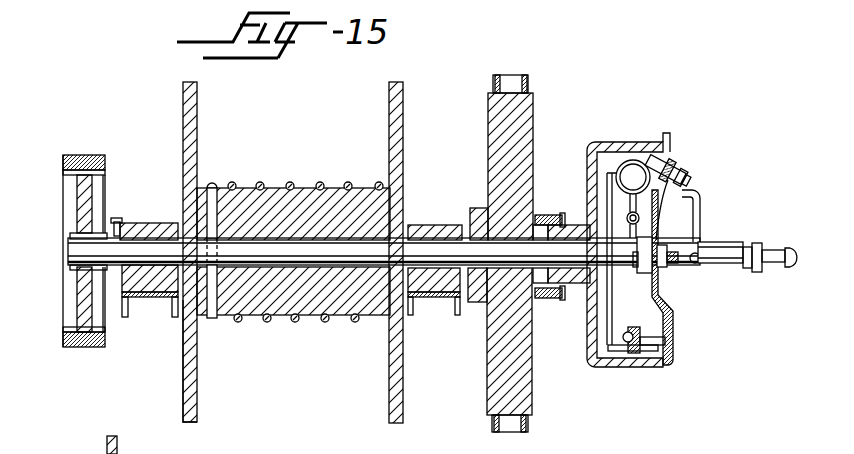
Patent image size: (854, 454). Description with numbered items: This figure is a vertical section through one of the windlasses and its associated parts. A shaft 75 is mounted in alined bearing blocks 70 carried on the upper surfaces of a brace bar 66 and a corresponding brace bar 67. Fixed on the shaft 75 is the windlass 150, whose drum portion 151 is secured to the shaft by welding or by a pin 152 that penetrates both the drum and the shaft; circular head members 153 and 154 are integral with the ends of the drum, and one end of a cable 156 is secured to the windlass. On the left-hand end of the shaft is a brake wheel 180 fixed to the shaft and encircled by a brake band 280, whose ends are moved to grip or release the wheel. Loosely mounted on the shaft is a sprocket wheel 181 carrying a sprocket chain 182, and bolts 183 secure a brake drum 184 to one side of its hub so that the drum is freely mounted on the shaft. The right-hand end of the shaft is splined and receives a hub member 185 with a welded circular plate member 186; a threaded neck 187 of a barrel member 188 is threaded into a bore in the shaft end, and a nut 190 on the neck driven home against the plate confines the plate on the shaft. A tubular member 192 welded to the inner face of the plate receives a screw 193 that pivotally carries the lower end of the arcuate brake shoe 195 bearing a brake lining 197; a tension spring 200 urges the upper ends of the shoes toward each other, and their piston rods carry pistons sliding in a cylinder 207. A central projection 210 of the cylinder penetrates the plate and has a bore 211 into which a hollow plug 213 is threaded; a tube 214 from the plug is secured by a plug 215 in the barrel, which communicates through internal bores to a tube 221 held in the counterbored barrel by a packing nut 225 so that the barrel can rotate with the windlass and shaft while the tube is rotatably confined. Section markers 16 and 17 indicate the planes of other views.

The shaft 75 is at (68, 252).
The brake band 280 is at (78, 156).
The brake wheel 180 is at (106, 184).
The bearing blocks 70 is at (172, 214).
The brace bar 66 is at (155, 294).
The brace bar 67 is at (435, 296).
The circular head member 153 is at (189, 100).
The windlass 150 is at (182, 386).
The circular head member 154 is at (402, 100).
The drum portion 151 is at (278, 314).
The pin 152 is at (208, 320).
The cable 156 is at (259, 183).
The sprocket wheel 181 is at (534, 143).
The sprocket chain 182 is at (528, 82).
The bolts 183 is at (556, 202).
The brake drum 184 is at (575, 226).
The circular plate member 186 is at (672, 312).
The cylinder 207 is at (646, 160).
The tension spring 200 is at (633, 217).
The brake shoe 195 is at (632, 310).
The brake lining 197 is at (608, 352).
The hub member 185 is at (648, 272).
The nut 190 is at (660, 243).
The threaded neck 187 is at (670, 265).
The plug 215 is at (699, 262).
The barrel member 188 is at (706, 243).
The packing nut 225 is at (757, 272).
The tube 221 is at (775, 250).
The tube 214 is at (700, 208).
The projection 210 is at (686, 147).
The bore 211 is at (698, 164).
The hollow plug 213 is at (709, 175).
The tubular member 192 is at (662, 348).
The screw 193 is at (628, 348).
The section line 16- 16 is at (615, 278).
The section line 17- 17 is at (625, 103).